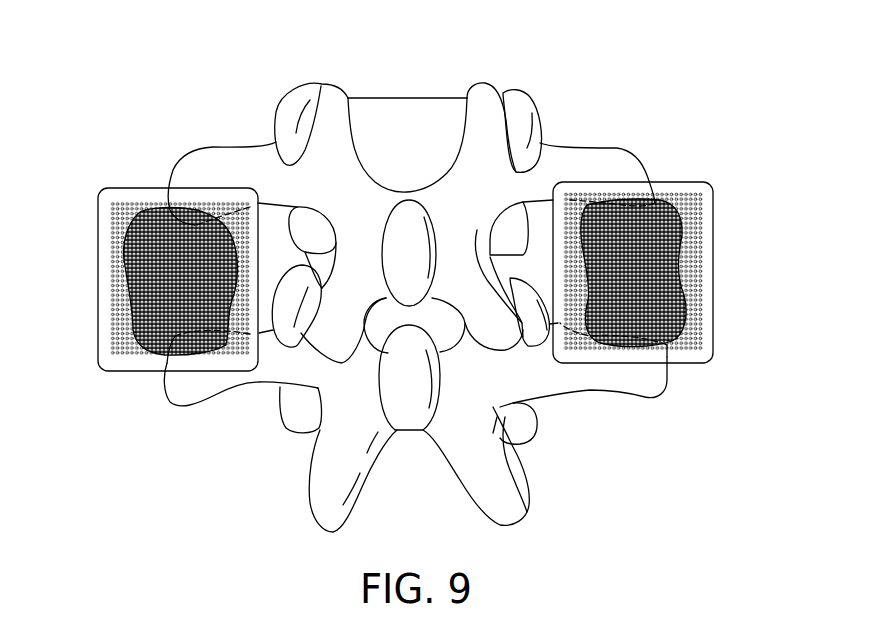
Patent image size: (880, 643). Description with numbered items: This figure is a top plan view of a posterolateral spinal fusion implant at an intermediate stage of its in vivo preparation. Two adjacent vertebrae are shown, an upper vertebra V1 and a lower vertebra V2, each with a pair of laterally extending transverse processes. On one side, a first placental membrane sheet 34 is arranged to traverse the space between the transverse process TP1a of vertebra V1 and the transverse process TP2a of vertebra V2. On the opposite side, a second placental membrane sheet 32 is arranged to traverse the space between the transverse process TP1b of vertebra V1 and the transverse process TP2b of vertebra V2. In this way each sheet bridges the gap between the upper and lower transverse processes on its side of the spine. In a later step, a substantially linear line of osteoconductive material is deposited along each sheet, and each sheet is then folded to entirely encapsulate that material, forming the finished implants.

The second placental membrane sheet 32 is at (153, 276).
The first placental membrane sheet 34 is at (99, 222).
The vertebra V1 is at (320, 83).
The vertebra V2 is at (517, 517).
The transverse process TP1a is at (180, 173).
The transverse process TP1b is at (640, 175).
The transverse process TP2a is at (180, 388).
The transverse process TP2b is at (628, 382).